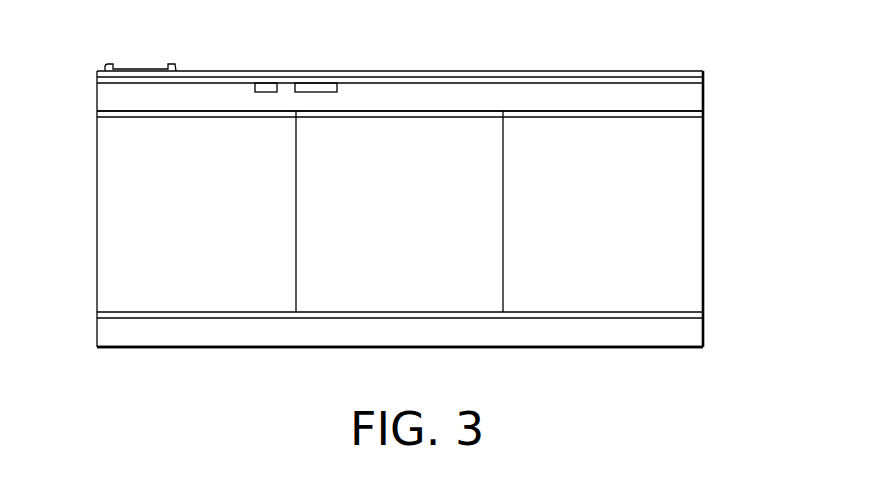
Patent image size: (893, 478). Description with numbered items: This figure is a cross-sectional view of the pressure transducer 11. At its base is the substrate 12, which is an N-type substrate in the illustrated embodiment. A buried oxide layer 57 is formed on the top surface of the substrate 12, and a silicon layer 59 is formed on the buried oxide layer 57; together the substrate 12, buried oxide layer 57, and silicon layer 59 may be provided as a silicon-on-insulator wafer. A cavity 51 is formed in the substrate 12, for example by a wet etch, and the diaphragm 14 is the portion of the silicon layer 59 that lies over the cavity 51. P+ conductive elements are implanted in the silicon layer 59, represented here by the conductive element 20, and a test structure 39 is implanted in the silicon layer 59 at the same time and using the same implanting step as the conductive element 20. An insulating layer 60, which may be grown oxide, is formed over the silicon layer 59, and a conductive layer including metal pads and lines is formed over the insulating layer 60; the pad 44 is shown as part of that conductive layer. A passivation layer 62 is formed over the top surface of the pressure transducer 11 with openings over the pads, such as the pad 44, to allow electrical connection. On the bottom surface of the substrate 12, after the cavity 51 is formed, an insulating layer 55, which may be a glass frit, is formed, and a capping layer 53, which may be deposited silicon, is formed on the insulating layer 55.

The pressure transducer 11 is at (50, 269).
The substrate 12 is at (166, 235).
The diaphragm 14 is at (400, 60).
The conductive element 20 is at (316, 87).
The test structure 39 is at (262, 87).
The pad 44 is at (136, 70).
The cavity 51 is at (341, 286).
The capping layer 53 is at (694, 330).
The insulating layer 55 is at (694, 315).
The buried oxide layer 57 is at (695, 117).
The silicon layer 59 is at (695, 97).
The insulating layer 60 is at (612, 83).
The passivation layer 62 is at (551, 76).